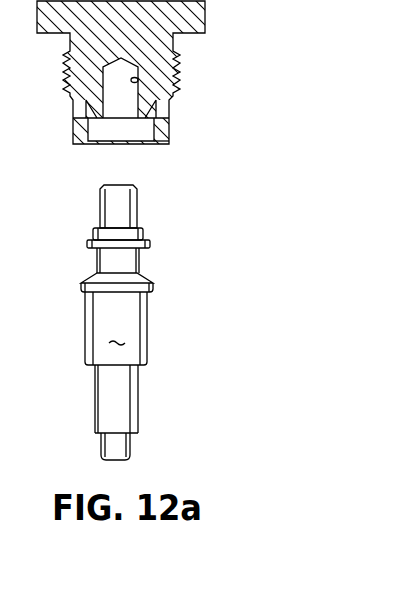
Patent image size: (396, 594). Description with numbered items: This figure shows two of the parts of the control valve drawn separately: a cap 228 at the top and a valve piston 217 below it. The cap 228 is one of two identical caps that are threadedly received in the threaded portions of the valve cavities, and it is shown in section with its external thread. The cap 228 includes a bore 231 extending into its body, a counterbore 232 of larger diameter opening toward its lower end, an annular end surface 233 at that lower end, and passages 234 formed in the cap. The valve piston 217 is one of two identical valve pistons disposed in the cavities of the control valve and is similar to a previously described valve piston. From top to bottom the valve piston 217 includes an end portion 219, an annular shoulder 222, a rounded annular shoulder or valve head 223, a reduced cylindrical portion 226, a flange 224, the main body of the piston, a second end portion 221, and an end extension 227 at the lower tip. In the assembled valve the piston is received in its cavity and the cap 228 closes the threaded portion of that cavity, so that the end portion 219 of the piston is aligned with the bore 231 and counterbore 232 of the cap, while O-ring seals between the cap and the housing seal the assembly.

The valve piston 217 is at (116, 328).
The end portion 219 is at (137, 202).
The end portion 221 is at (138, 397).
The annular shoulder 222 is at (96, 229).
The rounded annular shoulder or valve head 223 is at (89, 251).
The flange 224 is at (153, 288).
The reduced cylindrical portion 226 is at (128, 262).
The end extension 227 is at (130, 443).
The cap 228 is at (205, 17).
The bore 231 is at (138, 80).
The counterbore 232 is at (96, 132).
The annular end surface 233 is at (161, 143).
The passages 234 is at (162, 111).